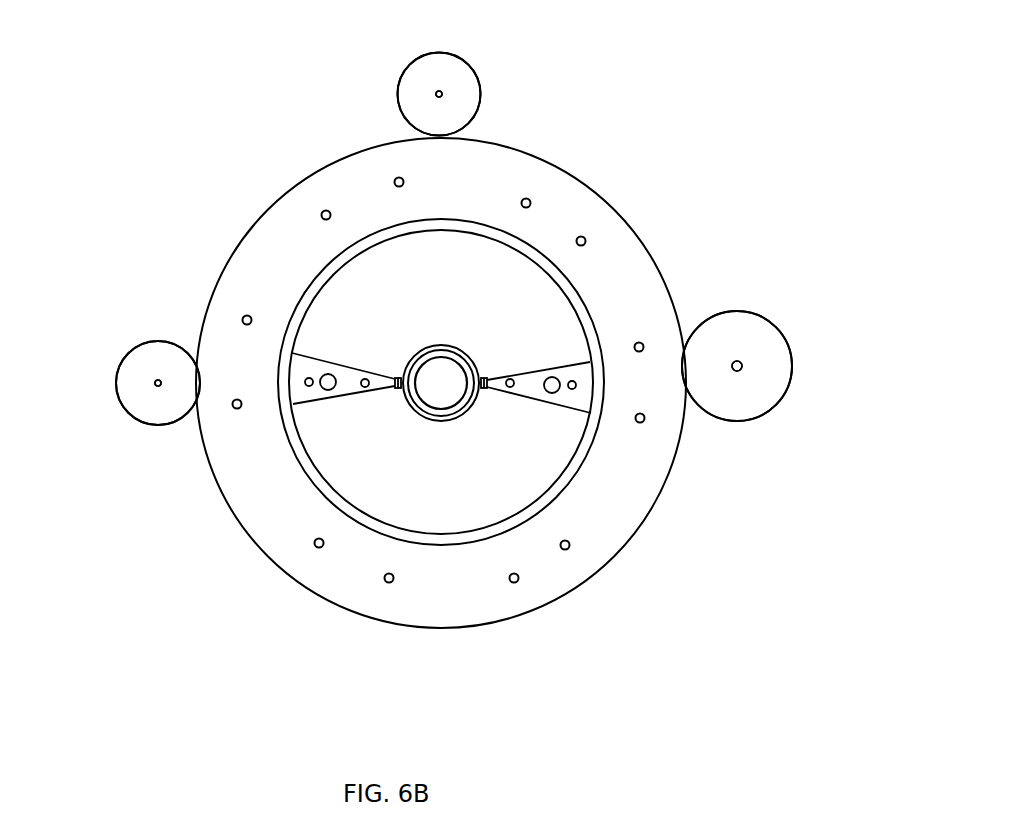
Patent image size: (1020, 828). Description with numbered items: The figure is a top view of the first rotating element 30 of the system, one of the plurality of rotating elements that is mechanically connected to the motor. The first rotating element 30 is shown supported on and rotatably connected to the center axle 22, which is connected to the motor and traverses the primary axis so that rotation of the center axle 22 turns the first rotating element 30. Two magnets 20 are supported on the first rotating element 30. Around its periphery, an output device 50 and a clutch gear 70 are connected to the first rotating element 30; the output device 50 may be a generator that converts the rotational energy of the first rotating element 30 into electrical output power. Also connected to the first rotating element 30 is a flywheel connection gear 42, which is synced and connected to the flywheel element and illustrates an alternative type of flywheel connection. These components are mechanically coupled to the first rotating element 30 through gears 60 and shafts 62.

The magnets 20 is at (315, 390).
The center axle 22 is at (442, 380).
The first rotating element 30 is at (593, 163).
The flywheel connection gear 42 is at (480, 62).
The output device 50 is at (757, 433).
The gears 60 is at (455, 112).
The shafts 62 is at (442, 94).
The clutch gear 70 is at (108, 367).